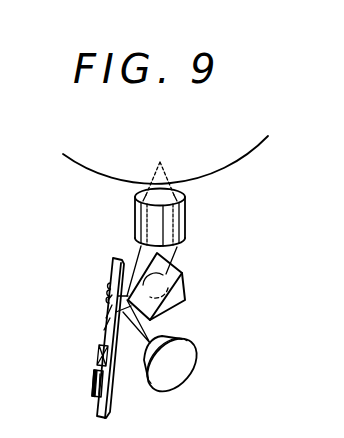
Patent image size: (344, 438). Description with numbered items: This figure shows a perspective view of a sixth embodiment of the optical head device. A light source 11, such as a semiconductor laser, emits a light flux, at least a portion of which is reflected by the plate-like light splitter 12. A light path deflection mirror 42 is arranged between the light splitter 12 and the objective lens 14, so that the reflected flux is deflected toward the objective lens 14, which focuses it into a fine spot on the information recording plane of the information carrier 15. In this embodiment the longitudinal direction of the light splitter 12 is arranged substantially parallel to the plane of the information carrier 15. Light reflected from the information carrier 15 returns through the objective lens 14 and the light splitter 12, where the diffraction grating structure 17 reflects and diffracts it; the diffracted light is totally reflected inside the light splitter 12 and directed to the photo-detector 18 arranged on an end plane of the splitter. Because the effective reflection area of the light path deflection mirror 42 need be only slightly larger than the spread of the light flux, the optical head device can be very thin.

The information carrier 15 is at (250, 143).
The objective lens 14 is at (186, 214).
The light path deflection mirror 42 is at (187, 288).
The light splitter 12 is at (112, 261).
The diffraction grating structure 17 is at (106, 292).
The photo-detector 18 is at (93, 382).
The light source 11 is at (198, 357).